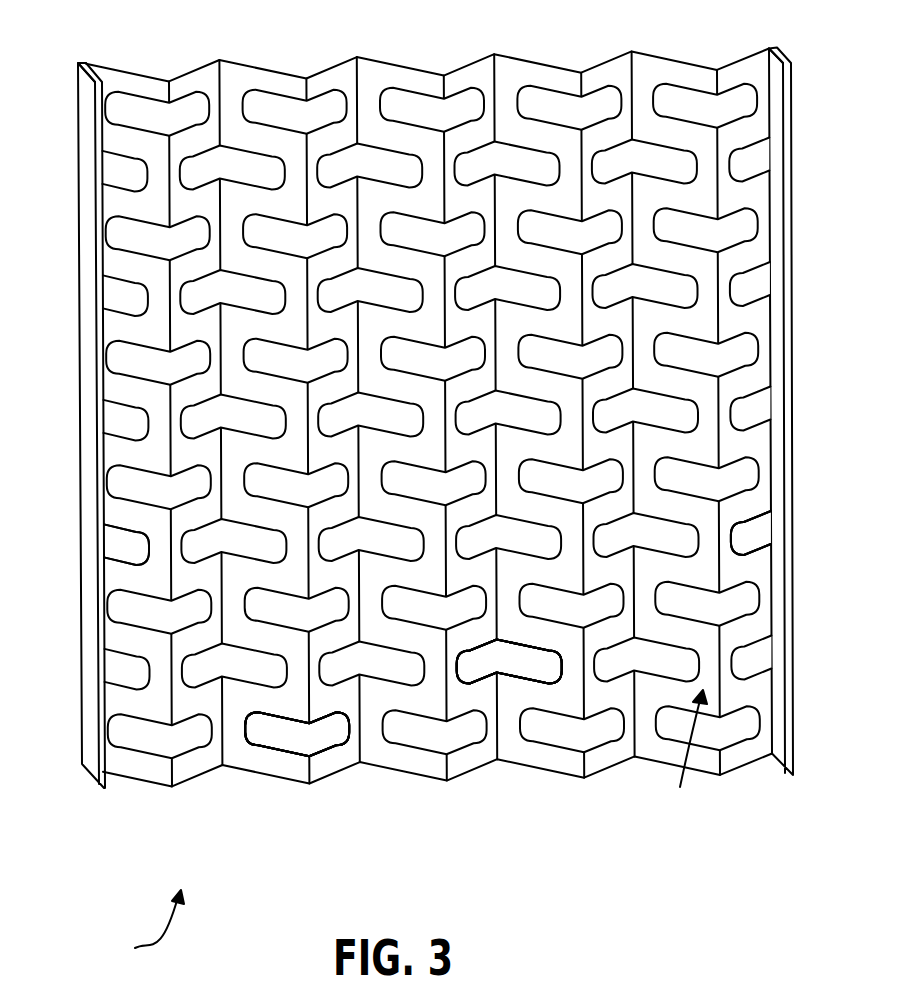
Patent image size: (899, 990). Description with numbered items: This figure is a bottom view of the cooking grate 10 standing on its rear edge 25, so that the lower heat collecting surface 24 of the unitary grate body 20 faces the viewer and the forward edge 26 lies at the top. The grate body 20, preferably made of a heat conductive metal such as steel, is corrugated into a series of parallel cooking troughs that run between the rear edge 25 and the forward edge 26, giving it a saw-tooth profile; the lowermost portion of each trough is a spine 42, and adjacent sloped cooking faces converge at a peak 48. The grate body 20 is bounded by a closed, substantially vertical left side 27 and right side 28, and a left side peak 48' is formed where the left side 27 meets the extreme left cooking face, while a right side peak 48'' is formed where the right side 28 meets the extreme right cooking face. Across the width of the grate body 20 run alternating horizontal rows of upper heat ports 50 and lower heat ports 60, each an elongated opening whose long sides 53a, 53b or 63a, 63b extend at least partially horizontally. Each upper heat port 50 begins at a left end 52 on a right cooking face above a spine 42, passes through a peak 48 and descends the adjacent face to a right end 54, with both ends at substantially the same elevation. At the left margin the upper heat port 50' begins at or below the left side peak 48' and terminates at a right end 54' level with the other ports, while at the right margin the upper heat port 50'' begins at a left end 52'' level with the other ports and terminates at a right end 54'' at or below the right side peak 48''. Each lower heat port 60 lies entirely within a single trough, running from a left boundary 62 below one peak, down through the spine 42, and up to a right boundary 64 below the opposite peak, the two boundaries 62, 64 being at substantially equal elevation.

The cooking grate 10 is at (144, 929).
The grate body 20 is at (441, 435).
The lower heat collecting surface 24 is at (677, 746).
The rear edge 25 is at (148, 786).
The forward edge 26 is at (110, 70).
The left side 27 is at (88, 377).
The right side 28 is at (792, 362).
The spine 42 is at (718, 776).
The peak 48 is at (495, 393).
The left side peak 48' is at (56, 51).
The right side peak 48'' is at (804, 41).
The upper heat port 50 is at (509, 743).
The left end 52 is at (509, 737).
The long side 53a is at (532, 678).
The long side 53b is at (530, 647).
The right end 54 is at (527, 732).
The upper heat port 50' is at (83, 544).
The right end 54' is at (85, 559).
The upper heat port 50'' is at (796, 522).
The left end 52'' is at (798, 542).
The right end 54'' is at (791, 497).
The lower heat port 60 is at (270, 737).
The left boundary 62 is at (247, 742).
The long side 63a is at (288, 752).
The long side 63b is at (292, 718).
The right boundary 64 is at (337, 740).